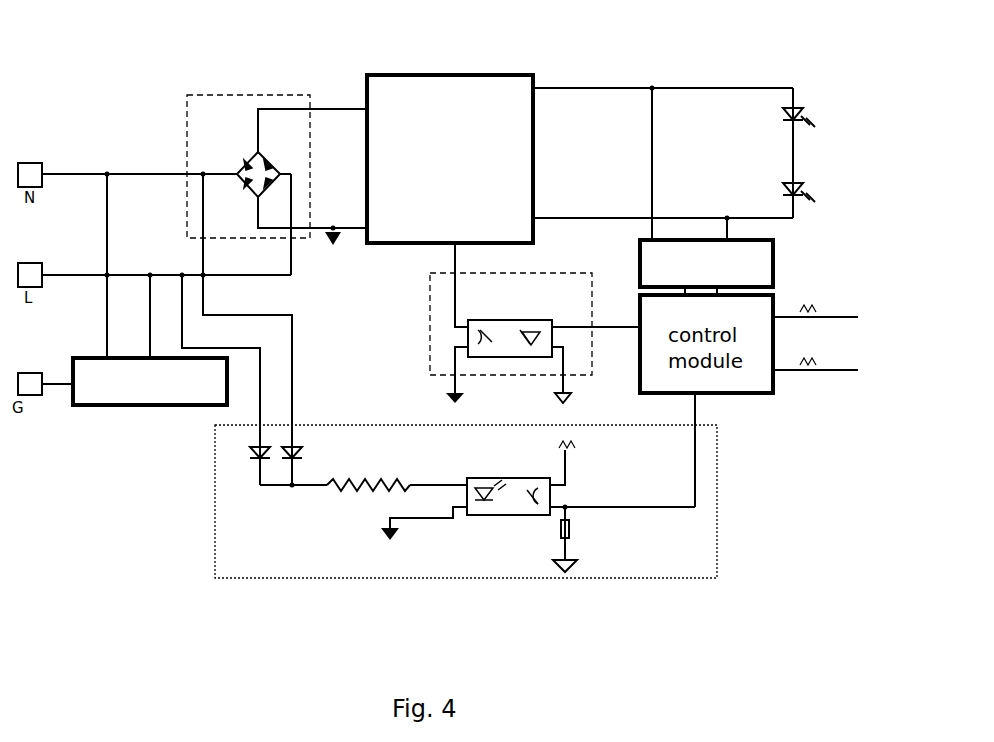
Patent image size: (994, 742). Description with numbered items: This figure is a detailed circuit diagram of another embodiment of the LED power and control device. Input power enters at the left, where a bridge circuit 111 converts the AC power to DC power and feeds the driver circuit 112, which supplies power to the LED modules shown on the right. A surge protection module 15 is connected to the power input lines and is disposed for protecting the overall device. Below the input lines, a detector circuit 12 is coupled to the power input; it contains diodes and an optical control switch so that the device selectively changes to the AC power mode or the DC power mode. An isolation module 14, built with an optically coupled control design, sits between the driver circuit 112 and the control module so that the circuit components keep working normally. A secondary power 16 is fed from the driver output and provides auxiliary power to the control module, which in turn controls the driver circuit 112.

The bridge circuit 111 is at (247, 94).
The driver circuit 112 is at (498, 74).
The secondary power 16 is at (768, 264).
The isolation module 14 is at (430, 336).
The surge protection module 15 is at (138, 406).
The detector circuit 12 is at (717, 525).